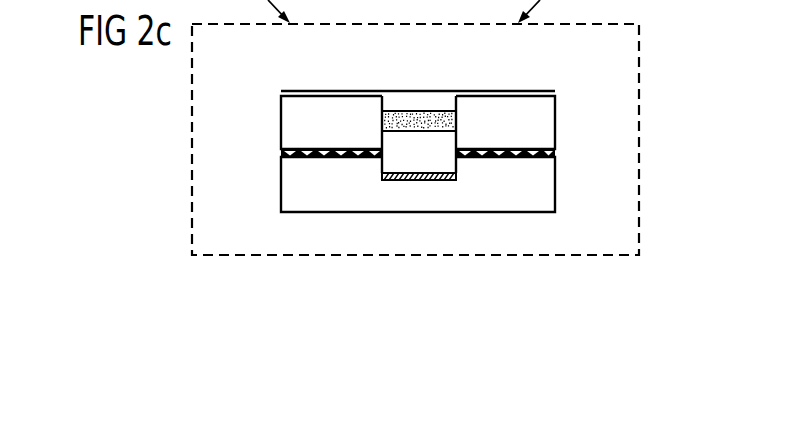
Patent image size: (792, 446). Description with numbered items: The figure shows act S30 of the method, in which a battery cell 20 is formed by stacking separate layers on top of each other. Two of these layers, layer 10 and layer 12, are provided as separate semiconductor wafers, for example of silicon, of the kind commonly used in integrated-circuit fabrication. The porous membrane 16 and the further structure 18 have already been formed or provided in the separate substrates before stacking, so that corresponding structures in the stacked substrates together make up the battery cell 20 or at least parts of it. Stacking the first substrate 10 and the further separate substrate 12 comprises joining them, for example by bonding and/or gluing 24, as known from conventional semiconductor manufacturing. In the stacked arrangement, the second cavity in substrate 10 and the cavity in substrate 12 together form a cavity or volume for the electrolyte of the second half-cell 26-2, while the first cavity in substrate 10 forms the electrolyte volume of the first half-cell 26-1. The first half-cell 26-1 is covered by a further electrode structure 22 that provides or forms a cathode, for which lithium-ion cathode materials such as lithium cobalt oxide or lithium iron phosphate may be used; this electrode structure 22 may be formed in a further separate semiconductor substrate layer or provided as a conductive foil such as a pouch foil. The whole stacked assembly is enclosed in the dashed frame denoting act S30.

The layer 10 is at (547, 122).
The layer 12 is at (544, 184).
The porous membrane 16 is at (436, 158).
The further structure 18 is at (456, 178).
The battery cell 20 is at (411, 146).
The further electrode structure 22 is at (498, 90).
The bonding 24 is at (270, 154).
The first half-cell 26-1 is at (418, 98).
The second half-cell 26-2 is at (410, 160).
The act S30 is at (641, 138).